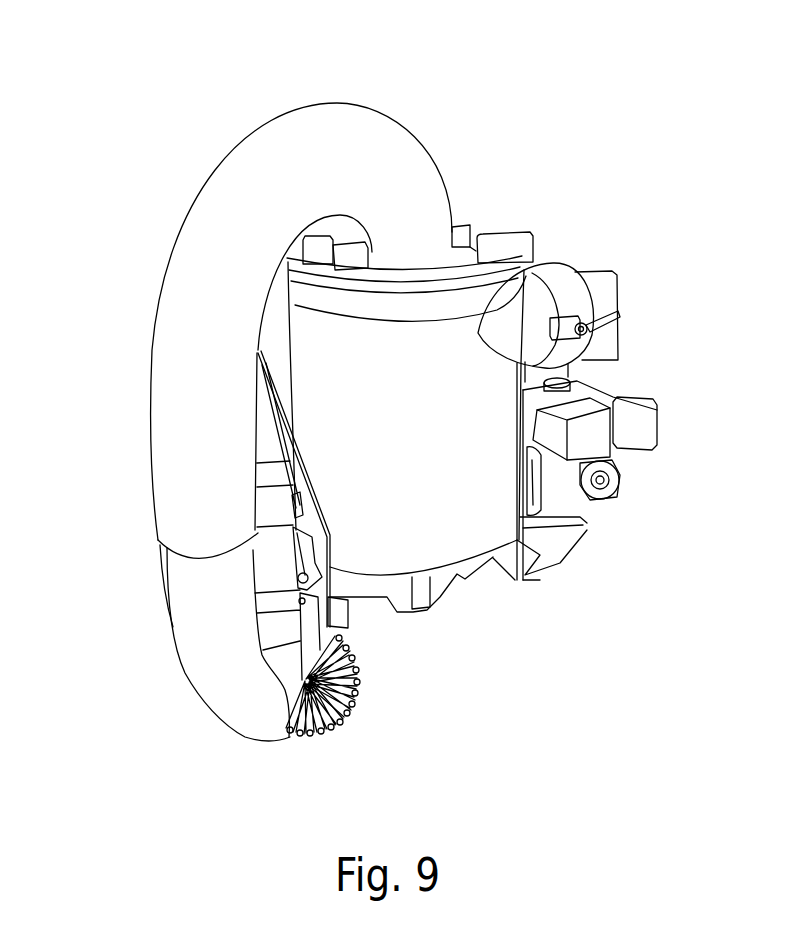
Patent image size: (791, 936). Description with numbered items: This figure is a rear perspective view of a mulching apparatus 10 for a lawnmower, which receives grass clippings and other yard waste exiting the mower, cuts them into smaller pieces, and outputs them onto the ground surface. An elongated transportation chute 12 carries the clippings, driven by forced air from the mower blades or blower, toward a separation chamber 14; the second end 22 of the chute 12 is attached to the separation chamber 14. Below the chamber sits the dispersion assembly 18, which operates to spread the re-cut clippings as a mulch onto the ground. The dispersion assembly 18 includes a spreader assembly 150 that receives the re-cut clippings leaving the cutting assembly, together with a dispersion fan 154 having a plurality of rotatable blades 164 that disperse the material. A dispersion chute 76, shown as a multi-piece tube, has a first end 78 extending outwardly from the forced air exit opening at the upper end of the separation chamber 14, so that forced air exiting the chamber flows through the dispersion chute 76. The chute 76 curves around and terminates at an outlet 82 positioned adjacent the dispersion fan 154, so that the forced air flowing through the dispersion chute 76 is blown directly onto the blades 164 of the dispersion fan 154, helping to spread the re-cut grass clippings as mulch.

The mulching apparatus 10 is at (360, 433).
The transportation chute 12 is at (575, 386).
The separation chamber 14 is at (500, 430).
The dispersion assembly 18 is at (284, 691).
The second end 22 is at (560, 275).
The dispersion chute 76 is at (188, 307).
The first end 78 is at (437, 262).
The outlet 82 is at (282, 718).
The spreader assembly 150 is at (373, 650).
The dispersion fan 154 is at (360, 685).
The blades 164 is at (338, 718).